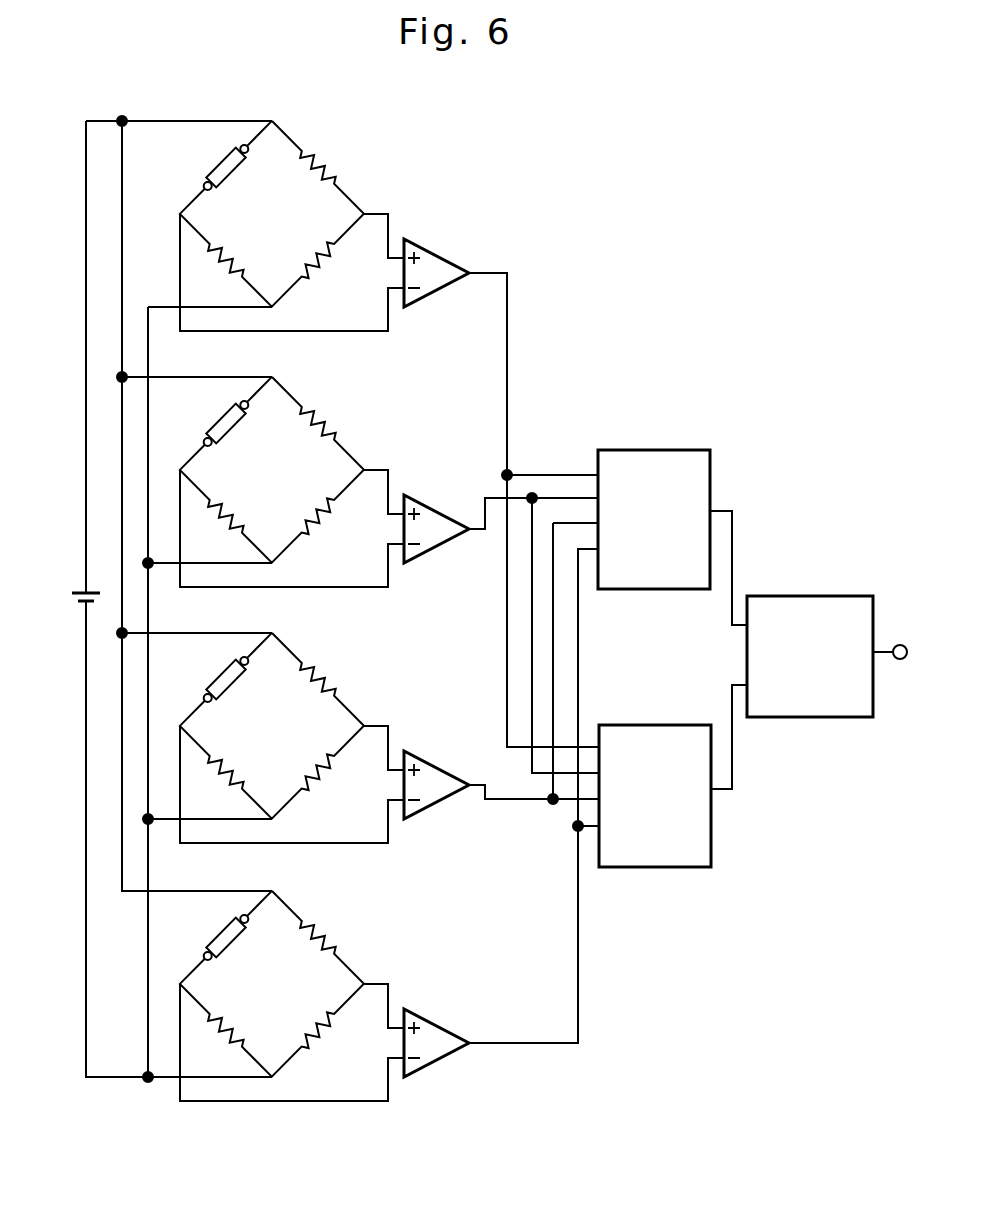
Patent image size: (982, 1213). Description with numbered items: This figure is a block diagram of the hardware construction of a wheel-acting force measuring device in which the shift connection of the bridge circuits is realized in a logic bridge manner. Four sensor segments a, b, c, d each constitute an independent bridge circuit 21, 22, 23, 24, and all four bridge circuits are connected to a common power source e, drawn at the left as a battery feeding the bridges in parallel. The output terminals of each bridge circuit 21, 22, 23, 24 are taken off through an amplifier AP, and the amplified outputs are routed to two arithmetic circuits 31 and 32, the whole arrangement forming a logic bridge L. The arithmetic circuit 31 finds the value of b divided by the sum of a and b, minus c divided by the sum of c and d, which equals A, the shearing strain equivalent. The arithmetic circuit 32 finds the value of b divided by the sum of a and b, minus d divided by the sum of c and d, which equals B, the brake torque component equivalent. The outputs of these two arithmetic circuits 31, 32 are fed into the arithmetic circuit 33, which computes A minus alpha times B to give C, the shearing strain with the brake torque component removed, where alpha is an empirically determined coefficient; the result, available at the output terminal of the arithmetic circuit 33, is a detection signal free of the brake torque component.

The bridge circuit 21 is at (276, 226).
The bridge circuit 22 is at (276, 482).
The bridge circuit 23 is at (276, 738).
The bridge circuit 24 is at (276, 996).
The arithmetic circuit 31 is at (654, 450).
The arithmetic circuit 32 is at (665, 867).
The arithmetic circuit 33 is at (805, 596).
The sensor segment a is at (220, 162).
The sensor segment b is at (220, 418).
The sensor segment c is at (220, 674).
The sensor segment d is at (220, 932).
The common power source e is at (77, 590).
The logic bridge L is at (366, 181).
The amplifier AP is at (432, 250).